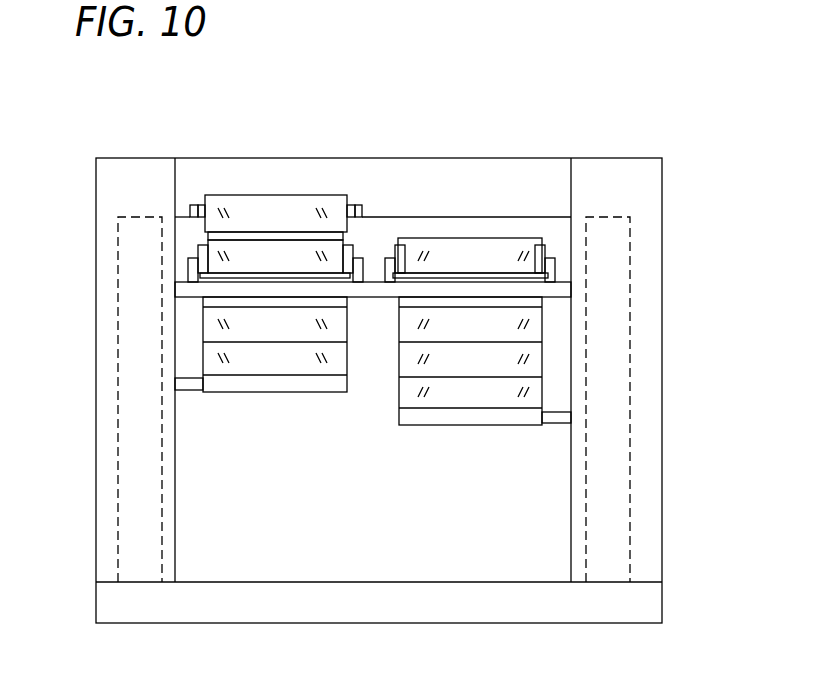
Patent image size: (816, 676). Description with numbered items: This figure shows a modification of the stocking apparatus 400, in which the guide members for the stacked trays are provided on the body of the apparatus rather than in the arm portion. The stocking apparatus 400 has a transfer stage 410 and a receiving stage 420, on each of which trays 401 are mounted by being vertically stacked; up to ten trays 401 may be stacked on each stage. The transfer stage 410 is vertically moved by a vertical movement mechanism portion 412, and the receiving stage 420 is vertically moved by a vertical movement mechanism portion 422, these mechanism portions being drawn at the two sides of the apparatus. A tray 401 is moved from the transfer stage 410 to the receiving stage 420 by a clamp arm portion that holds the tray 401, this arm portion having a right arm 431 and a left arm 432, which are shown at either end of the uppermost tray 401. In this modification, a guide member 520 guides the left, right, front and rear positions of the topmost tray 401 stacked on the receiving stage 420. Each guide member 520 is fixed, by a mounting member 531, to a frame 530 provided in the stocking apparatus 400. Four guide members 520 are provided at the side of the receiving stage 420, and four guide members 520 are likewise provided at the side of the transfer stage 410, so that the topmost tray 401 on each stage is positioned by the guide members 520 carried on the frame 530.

The stocking apparatus 400 is at (691, 168).
The tray 401 is at (277, 194).
The transfer stage 410 is at (468, 427).
The vertical movement mechanism portion 412 is at (612, 468).
The receiving stage 420 is at (274, 393).
The vertical movement mechanism portion 422 is at (133, 475).
The right arm 431 is at (355, 204).
The left arm 432 is at (190, 208).
The guide member 520 is at (197, 250).
The frame 530 is at (188, 291).
The mounting member 531 is at (187, 269).